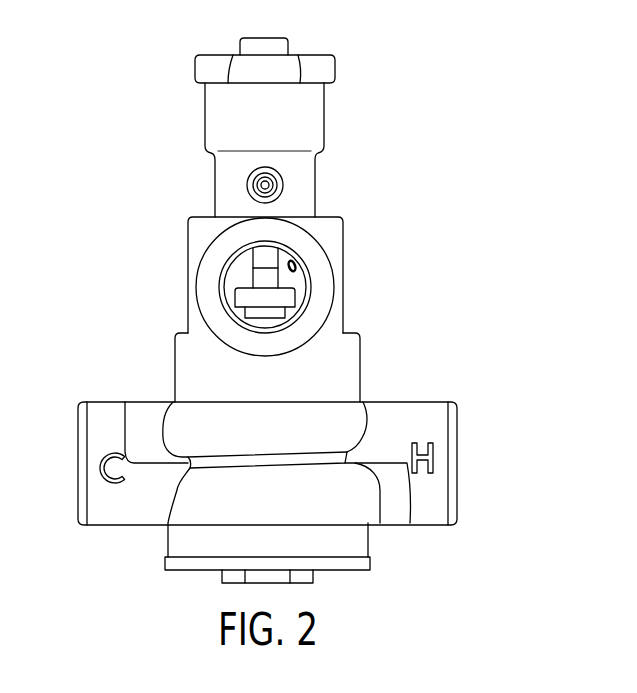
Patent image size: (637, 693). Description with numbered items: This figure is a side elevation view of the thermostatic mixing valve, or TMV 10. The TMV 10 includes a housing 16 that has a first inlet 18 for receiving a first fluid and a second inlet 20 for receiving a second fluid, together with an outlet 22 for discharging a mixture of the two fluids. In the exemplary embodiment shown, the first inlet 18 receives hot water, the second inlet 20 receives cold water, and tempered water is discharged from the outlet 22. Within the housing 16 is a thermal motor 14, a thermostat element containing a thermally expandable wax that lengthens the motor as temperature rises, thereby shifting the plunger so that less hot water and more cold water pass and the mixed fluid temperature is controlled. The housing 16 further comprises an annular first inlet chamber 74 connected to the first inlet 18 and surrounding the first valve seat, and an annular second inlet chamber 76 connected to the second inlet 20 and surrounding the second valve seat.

The TMV 10 is at (380, 223).
The thermal motor 14 is at (250, 280).
The housing 16 is at (175, 370).
The first inlet 18 is at (457, 471).
The second inlet 20 is at (78, 462).
The outlet 22 is at (295, 272).
The first inlet chamber 74 is at (355, 512).
The second inlet chamber 76 is at (348, 425).